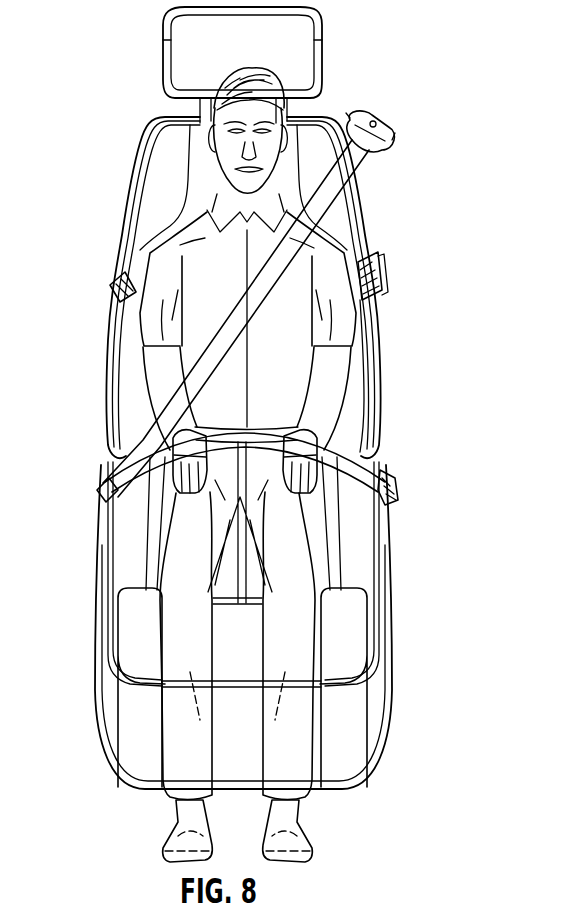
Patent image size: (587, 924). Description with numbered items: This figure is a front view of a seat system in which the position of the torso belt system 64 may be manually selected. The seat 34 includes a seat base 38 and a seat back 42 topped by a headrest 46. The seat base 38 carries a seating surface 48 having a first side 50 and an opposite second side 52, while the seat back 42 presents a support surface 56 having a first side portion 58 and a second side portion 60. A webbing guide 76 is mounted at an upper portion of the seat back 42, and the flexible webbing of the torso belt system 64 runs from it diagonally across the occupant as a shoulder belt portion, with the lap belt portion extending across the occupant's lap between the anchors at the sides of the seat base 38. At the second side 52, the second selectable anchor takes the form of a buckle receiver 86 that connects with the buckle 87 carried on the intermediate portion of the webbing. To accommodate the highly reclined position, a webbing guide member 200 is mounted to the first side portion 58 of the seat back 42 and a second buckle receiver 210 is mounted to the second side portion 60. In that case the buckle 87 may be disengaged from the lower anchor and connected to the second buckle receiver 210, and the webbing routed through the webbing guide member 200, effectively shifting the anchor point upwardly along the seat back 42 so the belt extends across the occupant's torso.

The seat 34 is at (414, 621).
The seat base 38 is at (381, 758).
The seat back 42 is at (388, 380).
The headrest 46 is at (300, 33).
The seating surface 48 is at (248, 657).
The first side 50 is at (360, 551).
The second side 52 is at (122, 578).
The support surface 56 is at (298, 306).
The first side portion 58 is at (380, 418).
The second side portion 60 is at (130, 178).
The torso belt system 64 is at (401, 485).
The webbing guide 76 is at (386, 118).
The buckle receiver 86 is at (93, 477).
The buckle 87 is at (101, 497).
The webbing guide member 200 is at (380, 282).
The second buckle receiver 210 is at (112, 280).